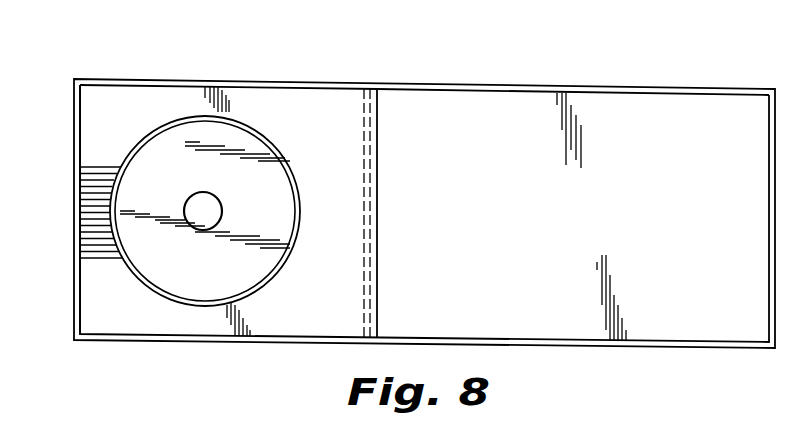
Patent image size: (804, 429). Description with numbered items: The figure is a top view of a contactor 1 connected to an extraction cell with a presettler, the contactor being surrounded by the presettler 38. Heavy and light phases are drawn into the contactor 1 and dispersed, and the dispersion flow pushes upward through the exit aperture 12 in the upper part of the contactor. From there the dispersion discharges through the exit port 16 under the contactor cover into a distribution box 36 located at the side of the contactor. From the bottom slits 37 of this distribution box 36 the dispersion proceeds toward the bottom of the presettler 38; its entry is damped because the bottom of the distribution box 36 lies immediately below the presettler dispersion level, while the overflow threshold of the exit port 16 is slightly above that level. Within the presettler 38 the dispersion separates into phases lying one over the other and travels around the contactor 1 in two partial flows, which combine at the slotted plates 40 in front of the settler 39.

The contactor 1 is at (177, 110).
The exit aperture of the dispersion 12 is at (208, 207).
The exit port 16 is at (120, 206).
The distribution box 36 is at (80, 170).
The bottom slits 37 is at (86, 201).
The presettler 38 is at (314, 103).
The settler 39 is at (507, 103).
The slotted plates 40 is at (378, 133).